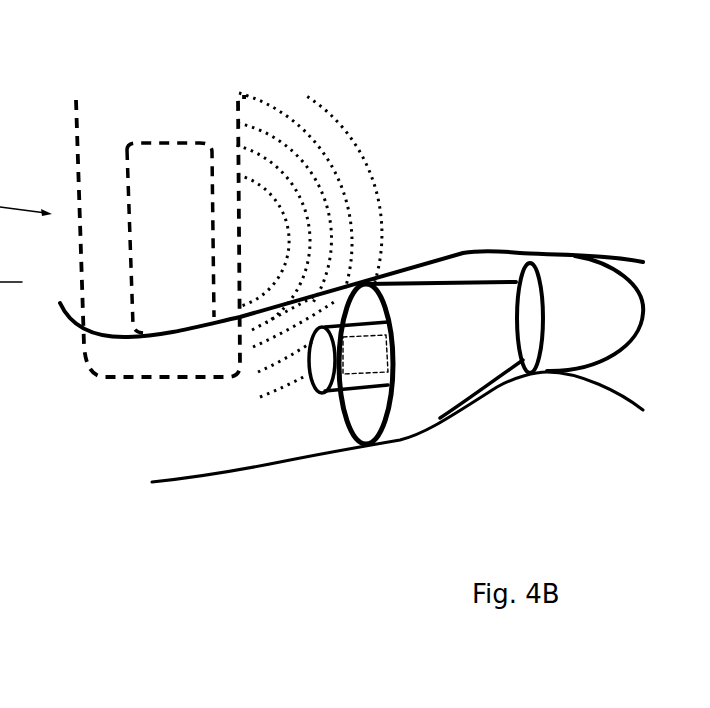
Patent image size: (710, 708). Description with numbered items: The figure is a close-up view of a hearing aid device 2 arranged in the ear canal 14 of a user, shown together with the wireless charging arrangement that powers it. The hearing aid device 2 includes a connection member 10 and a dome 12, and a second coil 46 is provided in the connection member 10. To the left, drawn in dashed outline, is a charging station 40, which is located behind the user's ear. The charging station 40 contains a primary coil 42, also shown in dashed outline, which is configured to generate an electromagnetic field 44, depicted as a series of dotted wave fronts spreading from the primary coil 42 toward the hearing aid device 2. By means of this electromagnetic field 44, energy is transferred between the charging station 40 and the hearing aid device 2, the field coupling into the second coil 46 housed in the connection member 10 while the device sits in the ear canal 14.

The hearing aid device 2 is at (455, 272).
The connection member 10 is at (337, 393).
The dome 12 is at (567, 275).
The ear canal 14 is at (272, 435).
The charging station 40 is at (110, 116).
The primary coil 42 is at (173, 190).
The electromagnetic field 44 is at (346, 192).
The second coil 46 is at (370, 370).